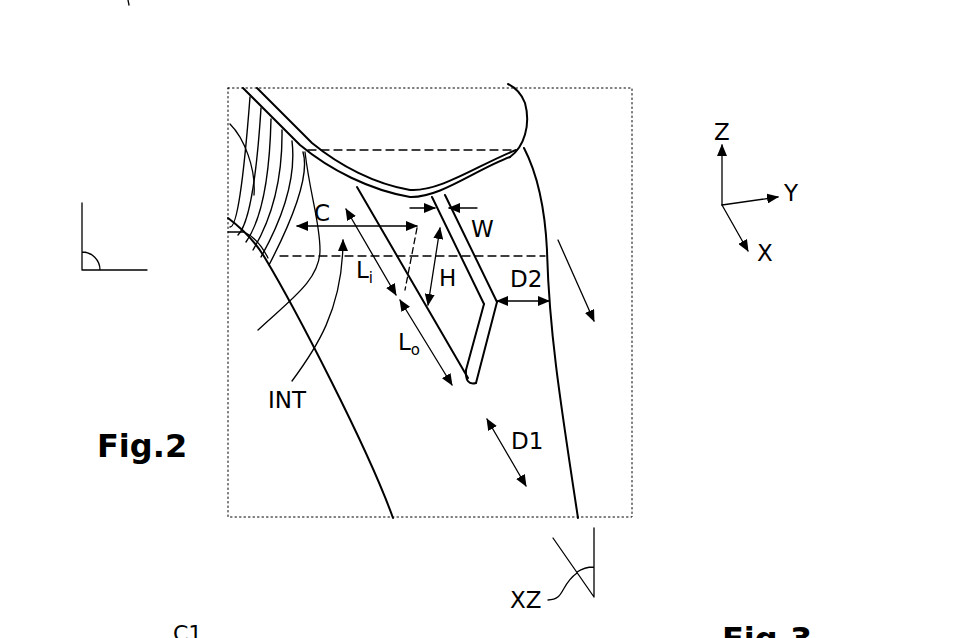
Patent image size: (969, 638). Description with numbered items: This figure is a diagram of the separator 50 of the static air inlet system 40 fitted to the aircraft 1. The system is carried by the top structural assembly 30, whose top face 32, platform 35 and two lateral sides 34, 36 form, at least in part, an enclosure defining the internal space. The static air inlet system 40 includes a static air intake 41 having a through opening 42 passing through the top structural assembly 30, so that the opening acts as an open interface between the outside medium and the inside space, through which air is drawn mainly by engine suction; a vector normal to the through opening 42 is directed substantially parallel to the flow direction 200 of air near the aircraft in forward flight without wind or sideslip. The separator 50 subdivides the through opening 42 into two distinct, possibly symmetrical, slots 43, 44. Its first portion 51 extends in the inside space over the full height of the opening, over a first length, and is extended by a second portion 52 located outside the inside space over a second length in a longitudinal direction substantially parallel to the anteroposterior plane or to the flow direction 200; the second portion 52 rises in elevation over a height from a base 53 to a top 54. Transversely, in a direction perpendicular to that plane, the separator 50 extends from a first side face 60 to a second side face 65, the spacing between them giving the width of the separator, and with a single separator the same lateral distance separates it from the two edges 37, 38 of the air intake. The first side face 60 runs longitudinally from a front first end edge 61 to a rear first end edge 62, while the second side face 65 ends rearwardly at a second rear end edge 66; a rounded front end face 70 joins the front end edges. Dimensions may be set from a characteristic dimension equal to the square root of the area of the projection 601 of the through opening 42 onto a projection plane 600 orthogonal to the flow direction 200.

The aircraft 1 is at (676, 436).
The top structural assembly 30 is at (524, 68).
The top face 32 is at (495, 100).
The lateral side 34 is at (256, 201).
The platform 35 is at (306, 241).
The lateral side 36 is at (525, 148).
The edge of the air intake 37 is at (232, 225).
The edge of the air intake 38 is at (534, 165).
The static air inlet system 40 is at (600, 243).
The static air intake 41 is at (261, 266).
The through opening 42 is at (362, 312).
The slot 43 is at (258, 330).
The slot 44 is at (521, 203).
The separator 50 is at (498, 325).
The first portion 51 is at (389, 207).
The second portion 52 is at (458, 390).
The base 53 is at (457, 383).
The top 54 is at (440, 207).
The first side face 60 is at (367, 450).
The front first end edge 61 is at (311, 140).
The rear first end edge 62 is at (477, 377).
The second side face 65 is at (490, 271).
The second rear end edge 66 is at (487, 340).
The rounded front end face 70 is at (368, 207).
The flow direction 200 is at (592, 280).
The projection plane 600 is at (93, 272).
The projection 601 is at (230, 124).